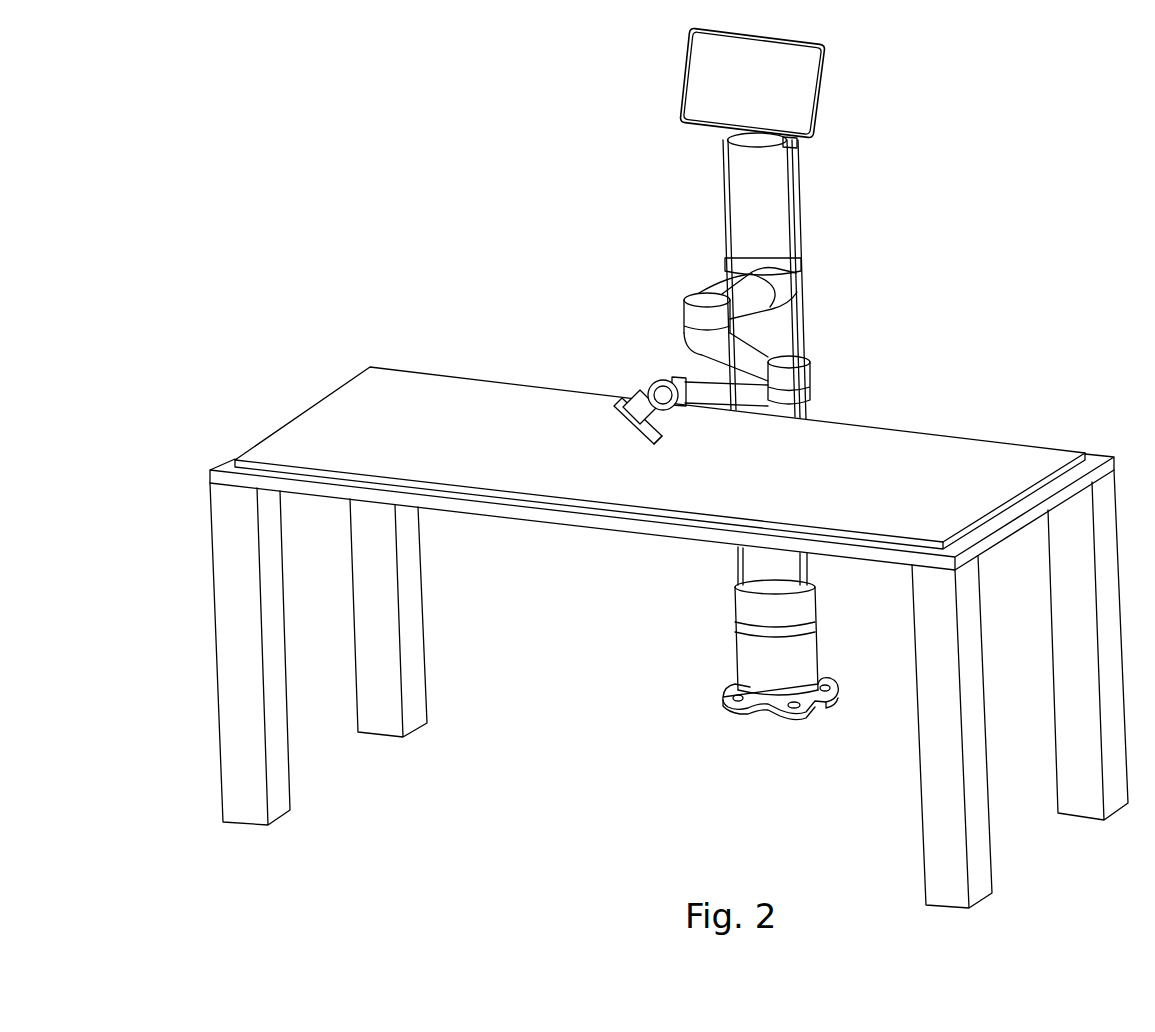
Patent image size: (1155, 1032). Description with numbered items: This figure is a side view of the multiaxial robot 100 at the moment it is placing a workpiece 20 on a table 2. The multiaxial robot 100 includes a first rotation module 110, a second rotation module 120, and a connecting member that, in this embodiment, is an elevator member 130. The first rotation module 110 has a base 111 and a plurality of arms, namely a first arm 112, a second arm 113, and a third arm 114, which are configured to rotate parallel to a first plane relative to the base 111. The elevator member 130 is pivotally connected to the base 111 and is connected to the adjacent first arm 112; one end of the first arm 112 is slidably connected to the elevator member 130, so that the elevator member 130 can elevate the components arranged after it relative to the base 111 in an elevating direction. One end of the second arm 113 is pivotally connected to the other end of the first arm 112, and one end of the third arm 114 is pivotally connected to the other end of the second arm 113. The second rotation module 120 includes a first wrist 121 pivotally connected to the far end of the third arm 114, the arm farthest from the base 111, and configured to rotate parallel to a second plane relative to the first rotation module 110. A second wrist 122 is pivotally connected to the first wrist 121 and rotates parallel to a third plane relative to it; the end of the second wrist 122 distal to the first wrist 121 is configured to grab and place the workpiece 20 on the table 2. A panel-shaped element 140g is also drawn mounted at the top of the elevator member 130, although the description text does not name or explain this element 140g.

The table 2 is at (322, 418).
The workpiece 20 is at (648, 444).
The multiaxial robot 100 is at (623, 81).
The first rotation module 110 is at (680, 260).
The base 111 is at (765, 658).
The first arm 112 is at (747, 290).
The second arm 113 is at (747, 353).
The third arm 114 is at (757, 393).
The second rotation module 120 is at (645, 303).
The first wrist 121 is at (645, 407).
The second wrist 122 is at (643, 403).
The elevator member 130 is at (773, 182).
The display 140g is at (810, 72).